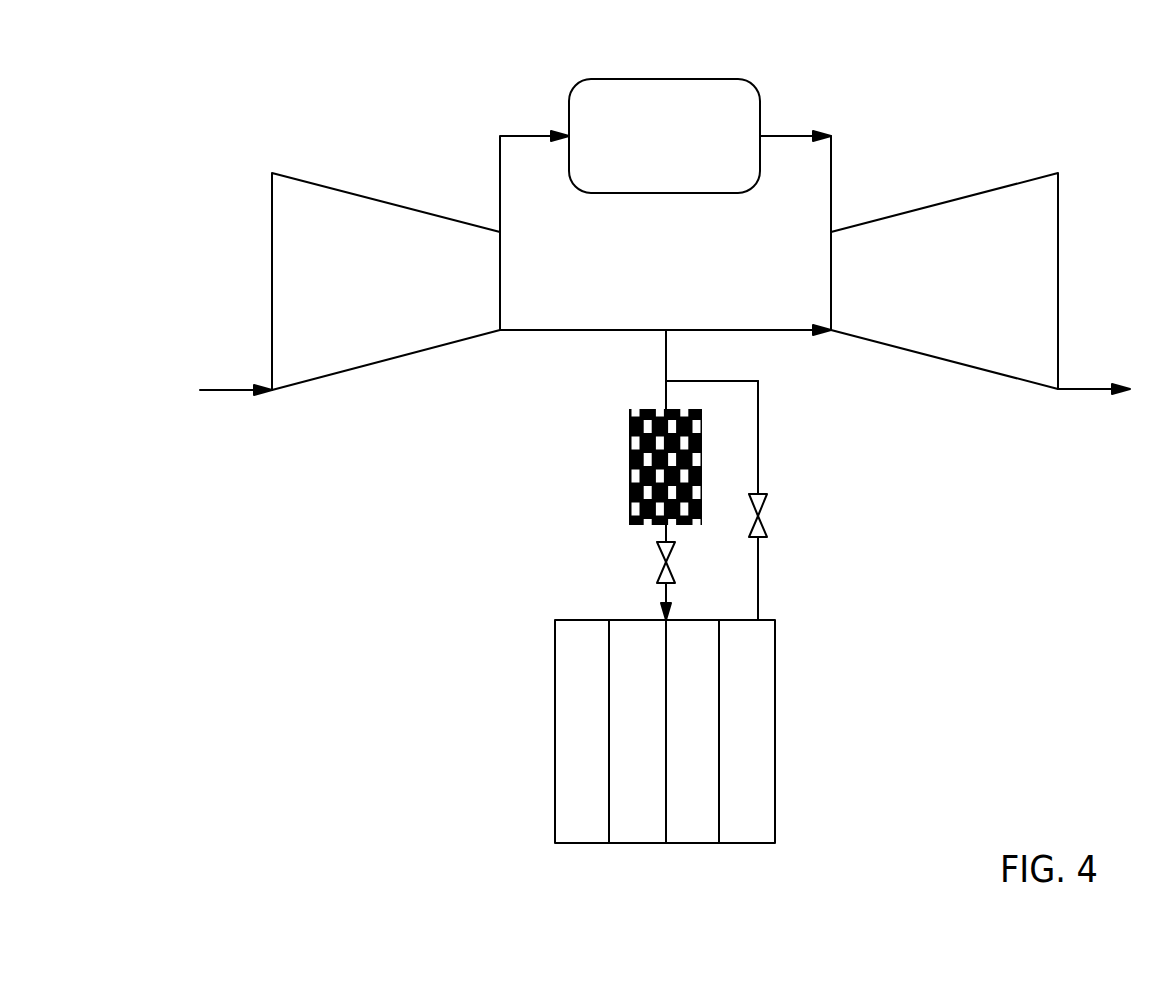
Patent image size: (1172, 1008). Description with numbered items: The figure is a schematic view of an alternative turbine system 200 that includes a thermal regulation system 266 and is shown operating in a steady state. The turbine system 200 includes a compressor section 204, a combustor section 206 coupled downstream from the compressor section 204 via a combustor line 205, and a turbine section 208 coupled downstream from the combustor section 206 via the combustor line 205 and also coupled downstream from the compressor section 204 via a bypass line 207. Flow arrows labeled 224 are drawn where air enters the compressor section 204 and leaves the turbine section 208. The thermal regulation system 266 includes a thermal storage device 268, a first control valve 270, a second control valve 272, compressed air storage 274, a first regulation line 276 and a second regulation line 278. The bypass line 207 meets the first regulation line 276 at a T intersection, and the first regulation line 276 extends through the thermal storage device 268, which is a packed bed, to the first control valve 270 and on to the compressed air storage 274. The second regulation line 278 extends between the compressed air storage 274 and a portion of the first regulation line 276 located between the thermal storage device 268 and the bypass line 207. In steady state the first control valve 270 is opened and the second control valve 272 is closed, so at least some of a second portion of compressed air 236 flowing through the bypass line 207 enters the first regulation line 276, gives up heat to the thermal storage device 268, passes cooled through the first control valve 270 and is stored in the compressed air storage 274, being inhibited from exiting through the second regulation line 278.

The turbine system 200 is at (229, 65).
The compressor section 204 is at (290, 173).
The combustor line 205 is at (500, 137).
The combustor section 206 is at (700, 79).
The bypass line 207 is at (583, 330).
The turbine section 208 is at (1020, 181).
The air flow 224 is at (222, 390).
The second portion of compressed air 236 is at (518, 345).
The thermal regulation system 266 is at (500, 470).
The thermal storage device 268 is at (630, 492).
The first control valve 270 is at (657, 568).
The second control valve 272 is at (767, 522).
The compressed air storage 274 is at (640, 815).
The first regulation line 276 is at (665, 369).
The second regulation line 278 is at (758, 447).